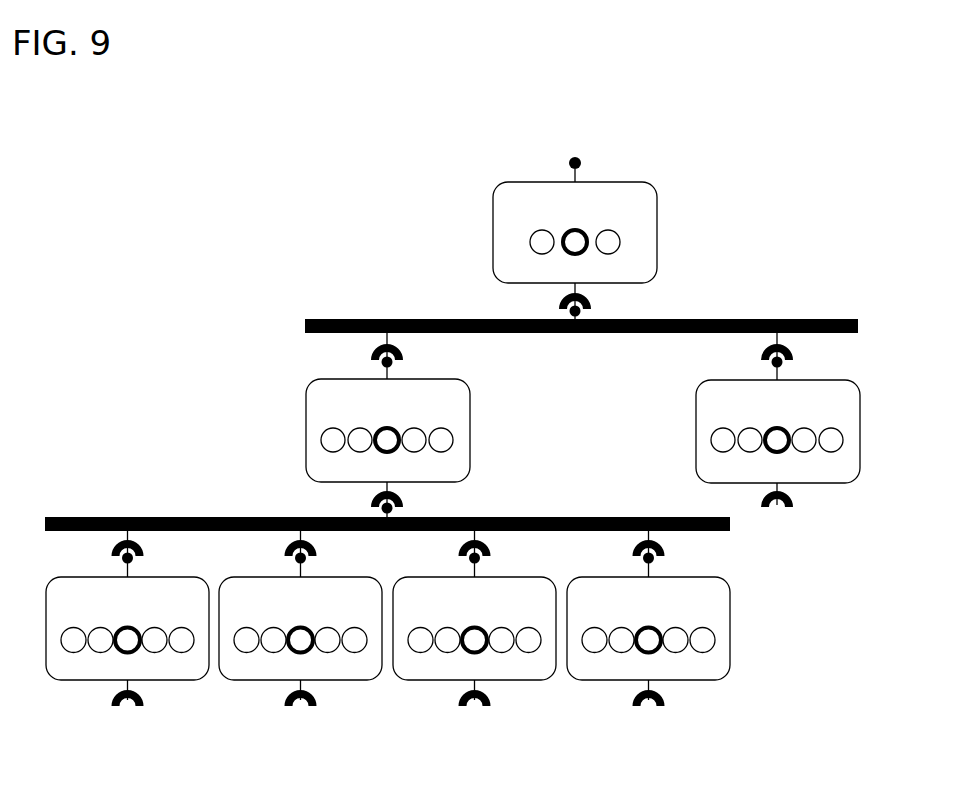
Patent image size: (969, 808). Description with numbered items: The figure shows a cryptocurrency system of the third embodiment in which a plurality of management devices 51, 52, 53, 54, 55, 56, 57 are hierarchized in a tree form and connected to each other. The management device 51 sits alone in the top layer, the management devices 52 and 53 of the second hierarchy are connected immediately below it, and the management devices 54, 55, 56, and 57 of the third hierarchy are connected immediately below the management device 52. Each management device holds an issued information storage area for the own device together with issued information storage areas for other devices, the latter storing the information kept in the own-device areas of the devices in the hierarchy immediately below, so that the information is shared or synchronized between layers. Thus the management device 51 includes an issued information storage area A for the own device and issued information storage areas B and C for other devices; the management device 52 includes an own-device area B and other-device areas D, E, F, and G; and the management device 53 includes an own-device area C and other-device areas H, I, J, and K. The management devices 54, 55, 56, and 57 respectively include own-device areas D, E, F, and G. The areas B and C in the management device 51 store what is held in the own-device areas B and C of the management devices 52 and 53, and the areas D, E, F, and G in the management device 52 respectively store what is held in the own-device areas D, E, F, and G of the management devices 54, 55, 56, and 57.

The management device 51 is at (640, 193).
The management device 52 is at (458, 407).
The management device 53 is at (705, 408).
The management device 54 is at (177, 585).
The management device 55 is at (351, 585).
The management device 56 is at (513, 590).
The management device 57 is at (687, 590).
The issued information storage area for the own device A is at (573, 243).
The issued information storage area B is at (532, 240).
The issued information storage area C is at (614, 240).
The issued information storage area D is at (332, 441).
The issued information storage area E is at (363, 443).
The issued information storage area F is at (418, 443).
The issued information storage area G is at (447, 441).
The issued information storage area for other devices H is at (728, 439).
The issued information storage area for other devices I is at (752, 442).
The issued information storage area for other devices J is at (803, 443).
The issued information storage area for other devices K is at (833, 439).